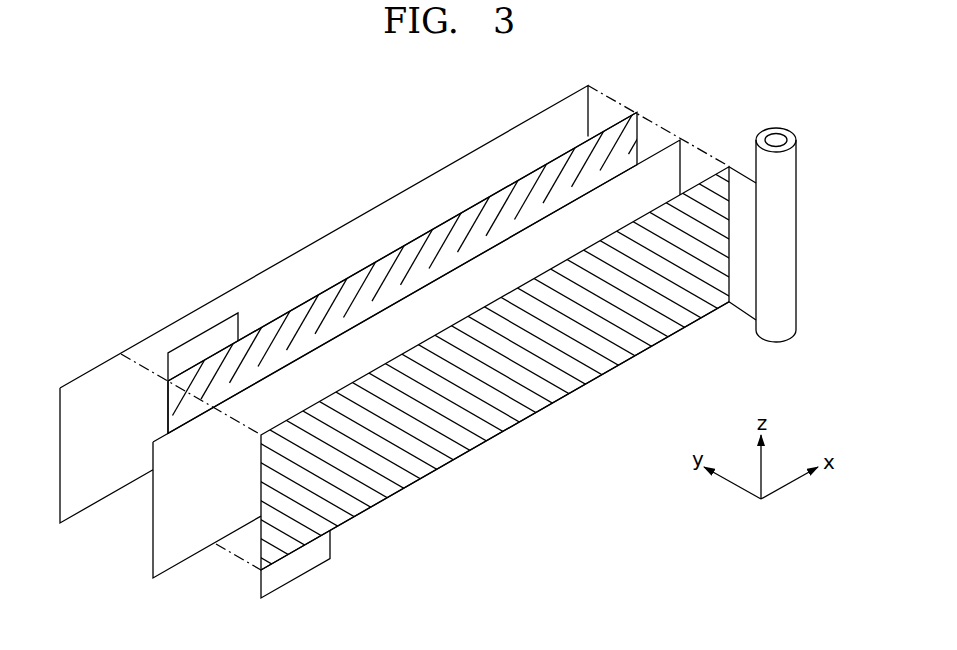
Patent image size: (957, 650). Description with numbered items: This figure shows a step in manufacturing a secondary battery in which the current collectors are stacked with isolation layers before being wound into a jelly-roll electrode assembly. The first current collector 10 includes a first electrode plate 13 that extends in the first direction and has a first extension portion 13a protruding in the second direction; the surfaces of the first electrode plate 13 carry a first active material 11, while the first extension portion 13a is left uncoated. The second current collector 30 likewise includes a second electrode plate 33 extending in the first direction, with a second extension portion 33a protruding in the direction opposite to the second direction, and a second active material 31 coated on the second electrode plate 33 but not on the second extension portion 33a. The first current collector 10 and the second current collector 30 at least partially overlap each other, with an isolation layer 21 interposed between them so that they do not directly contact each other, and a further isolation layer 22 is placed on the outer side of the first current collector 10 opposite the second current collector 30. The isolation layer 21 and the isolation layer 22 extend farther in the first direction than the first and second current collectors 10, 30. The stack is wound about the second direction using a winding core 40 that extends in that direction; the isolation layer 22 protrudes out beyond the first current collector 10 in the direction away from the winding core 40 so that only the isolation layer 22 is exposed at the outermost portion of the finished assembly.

The first current collector 10 is at (430, 238).
The first active material 11 is at (293, 300).
The first electrode plate 13 is at (358, 272).
The first extension portion 13a is at (203, 332).
The isolation layer 21 is at (177, 542).
The isolation layer 22 is at (83, 490).
The second current collector 30 is at (498, 325).
The second active material 31 is at (405, 477).
The second electrode plate 33 is at (480, 447).
The second extension portion 33a is at (358, 565).
The winding core 40 is at (788, 204).